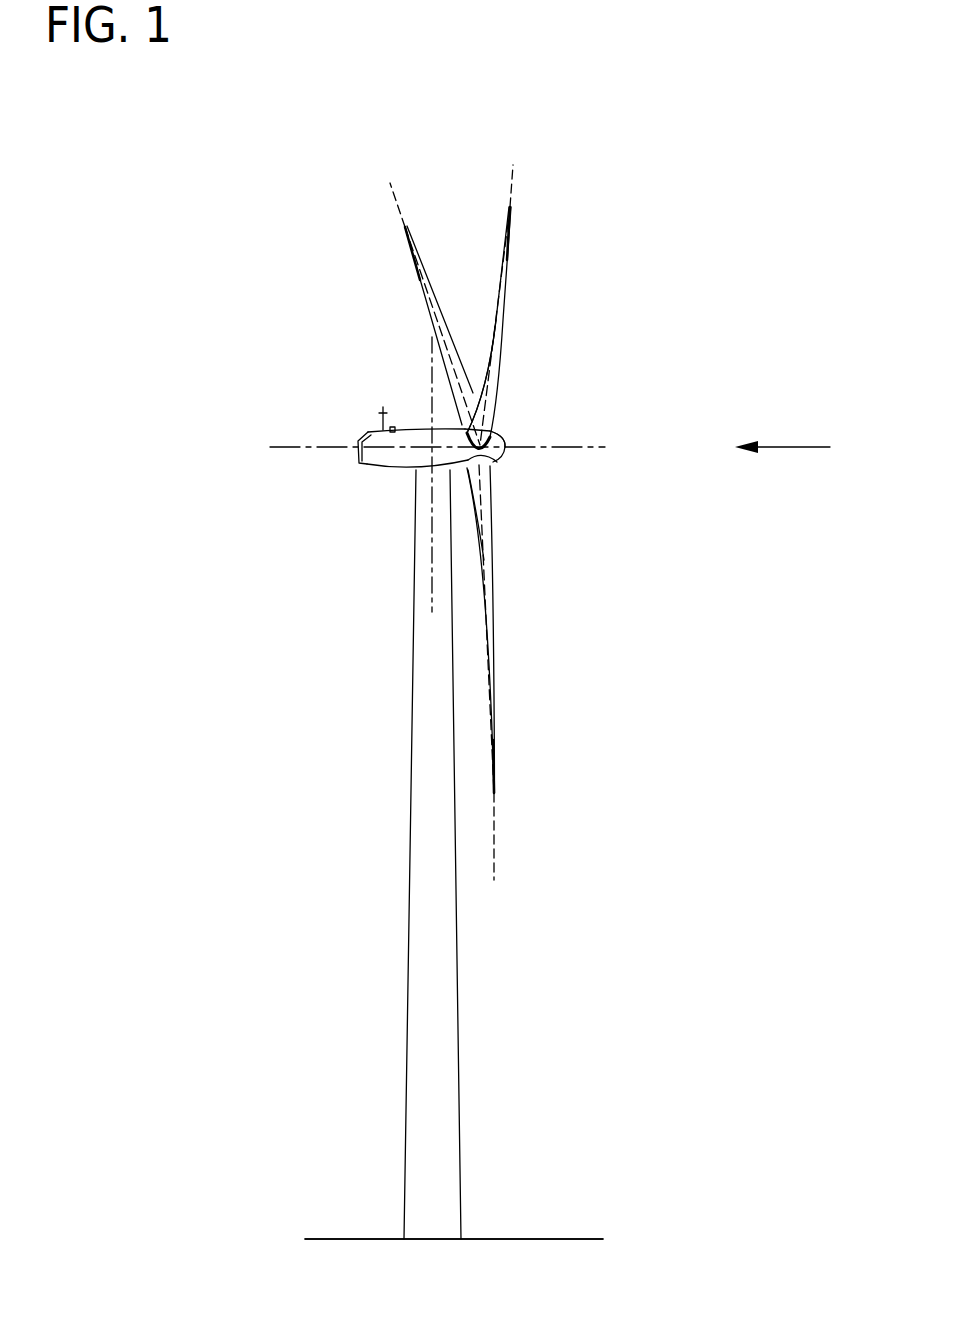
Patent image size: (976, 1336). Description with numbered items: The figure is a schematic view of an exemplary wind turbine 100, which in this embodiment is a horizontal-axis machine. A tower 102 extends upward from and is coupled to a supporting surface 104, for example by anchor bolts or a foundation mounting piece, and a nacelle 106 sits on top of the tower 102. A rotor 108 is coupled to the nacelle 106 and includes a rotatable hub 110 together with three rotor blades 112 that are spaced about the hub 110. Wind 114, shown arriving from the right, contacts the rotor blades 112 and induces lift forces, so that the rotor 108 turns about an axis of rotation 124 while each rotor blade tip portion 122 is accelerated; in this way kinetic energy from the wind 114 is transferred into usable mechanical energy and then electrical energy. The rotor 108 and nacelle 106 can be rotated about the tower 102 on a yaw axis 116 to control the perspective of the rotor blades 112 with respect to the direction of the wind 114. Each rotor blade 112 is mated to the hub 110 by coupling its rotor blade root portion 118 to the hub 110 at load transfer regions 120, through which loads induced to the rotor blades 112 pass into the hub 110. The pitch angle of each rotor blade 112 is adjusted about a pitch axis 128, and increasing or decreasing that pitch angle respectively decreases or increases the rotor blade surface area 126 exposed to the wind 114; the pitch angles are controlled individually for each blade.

The wind turbine 100 is at (186, 226).
The tower 102 is at (406, 1012).
The supporting surface 104 is at (362, 1238).
The nacelle 106 is at (393, 468).
The rotor 108 is at (540, 340).
The rotatable hub 110 is at (499, 445).
The rotor blades 112 is at (432, 324).
The wind 114 is at (806, 447).
The yaw axis 116 is at (430, 377).
The rotor blade root portion 118 is at (490, 520).
The load transfer regions 120 is at (487, 432).
The rotor blade tip portion 122 is at (407, 240).
The axis of rotation 124 is at (568, 448).
The rotor blade surface area 126 is at (494, 390).
The pitch axis 128 is at (390, 188).